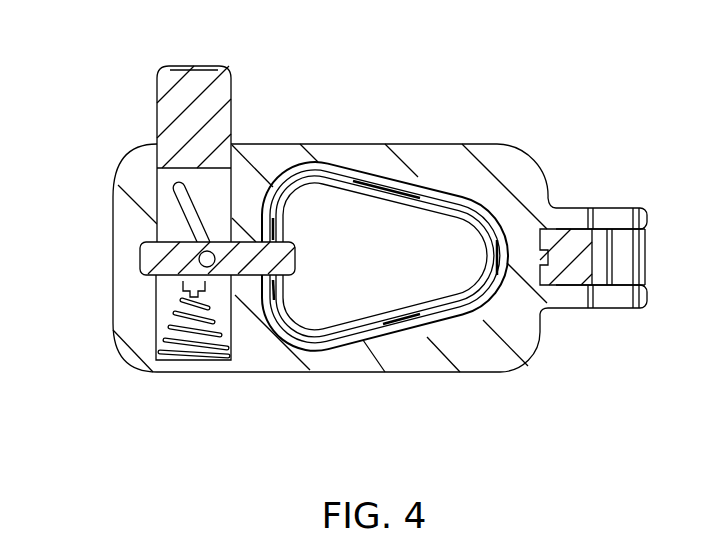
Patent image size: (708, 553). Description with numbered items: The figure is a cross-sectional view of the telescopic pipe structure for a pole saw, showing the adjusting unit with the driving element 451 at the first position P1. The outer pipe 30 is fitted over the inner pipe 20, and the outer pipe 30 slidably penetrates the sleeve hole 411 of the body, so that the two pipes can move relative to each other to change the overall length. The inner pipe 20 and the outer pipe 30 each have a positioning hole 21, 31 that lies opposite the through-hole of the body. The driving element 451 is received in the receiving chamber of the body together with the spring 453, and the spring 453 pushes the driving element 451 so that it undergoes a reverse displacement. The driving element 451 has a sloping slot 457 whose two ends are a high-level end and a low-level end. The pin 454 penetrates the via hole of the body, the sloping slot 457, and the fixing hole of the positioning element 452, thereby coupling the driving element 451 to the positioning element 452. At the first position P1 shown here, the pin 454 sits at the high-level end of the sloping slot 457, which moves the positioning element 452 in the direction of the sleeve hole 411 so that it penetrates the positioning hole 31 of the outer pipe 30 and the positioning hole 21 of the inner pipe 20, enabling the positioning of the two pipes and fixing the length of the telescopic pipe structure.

The first position P1 is at (118, 124).
The driving element 451 is at (218, 102).
The sleeve hole 411 is at (437, 237).
The sloping slot 457 is at (185, 212).
The positioning element 452 is at (158, 261).
The pin 454 is at (188, 274).
The spring 453 is at (197, 362).
The positioning hole 31 is at (263, 280).
The positioning hole 21 is at (288, 280).
The inner pipe 20 is at (388, 327).
The outer pipe 30 is at (437, 326).